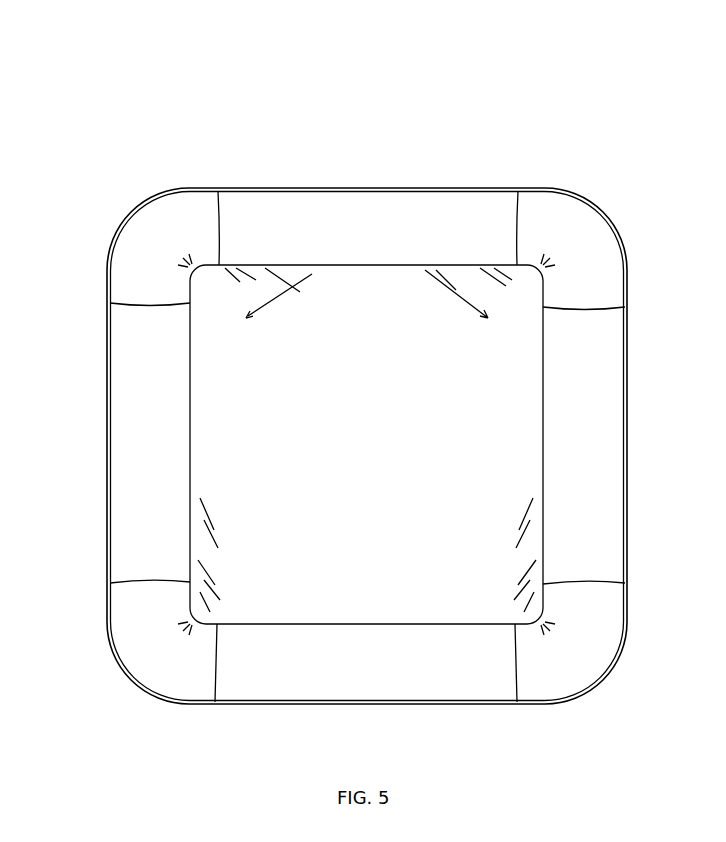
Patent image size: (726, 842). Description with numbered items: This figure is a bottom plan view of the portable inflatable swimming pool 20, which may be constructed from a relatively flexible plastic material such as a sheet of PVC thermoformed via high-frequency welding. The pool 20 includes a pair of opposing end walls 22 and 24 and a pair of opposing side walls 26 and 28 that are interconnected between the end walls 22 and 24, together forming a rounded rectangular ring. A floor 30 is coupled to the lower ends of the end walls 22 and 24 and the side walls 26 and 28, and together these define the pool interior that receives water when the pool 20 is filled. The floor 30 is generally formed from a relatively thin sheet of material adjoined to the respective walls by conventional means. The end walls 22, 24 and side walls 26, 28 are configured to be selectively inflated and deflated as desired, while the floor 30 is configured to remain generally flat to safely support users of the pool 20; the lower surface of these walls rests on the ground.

The portable inflatable swimming pool 20 is at (196, 79).
The end wall 22 is at (412, 188).
The end wall 24 is at (392, 705).
The side wall 26 is at (106, 562).
The side wall 28 is at (630, 565).
The floor 30 is at (361, 452).